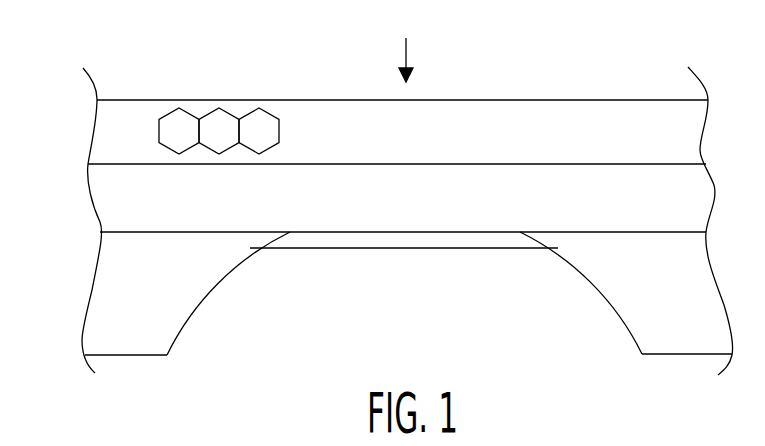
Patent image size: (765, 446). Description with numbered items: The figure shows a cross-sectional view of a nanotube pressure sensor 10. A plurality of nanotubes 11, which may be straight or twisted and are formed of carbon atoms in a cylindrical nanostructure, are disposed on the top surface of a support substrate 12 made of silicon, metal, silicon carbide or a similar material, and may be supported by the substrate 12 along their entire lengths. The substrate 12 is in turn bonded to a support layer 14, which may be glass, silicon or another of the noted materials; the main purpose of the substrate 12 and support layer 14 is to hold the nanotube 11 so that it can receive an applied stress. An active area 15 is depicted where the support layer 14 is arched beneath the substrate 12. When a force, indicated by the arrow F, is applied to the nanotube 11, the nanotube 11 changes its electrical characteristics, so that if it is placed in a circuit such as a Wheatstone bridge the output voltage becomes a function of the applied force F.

The vehicle seat/wheel assembly 10 is at (91, 38).
The nanotube 11 is at (464, 110).
The support substrate 12 is at (107, 192).
The support layer 14 is at (167, 308).
The active area 15 is at (368, 250).
The applied force F is at (407, 45).